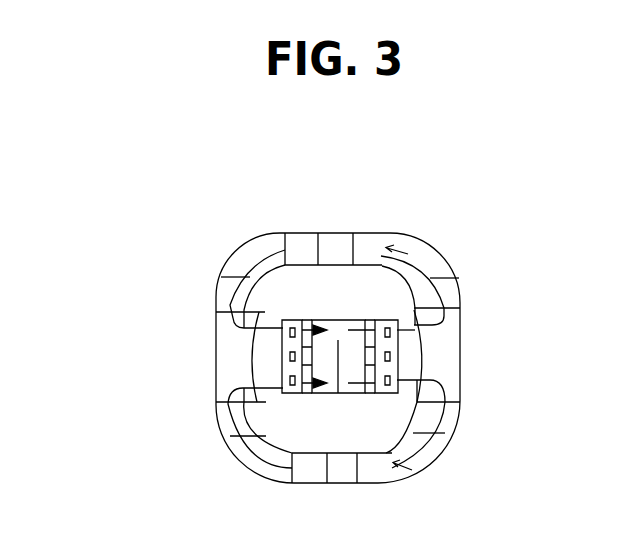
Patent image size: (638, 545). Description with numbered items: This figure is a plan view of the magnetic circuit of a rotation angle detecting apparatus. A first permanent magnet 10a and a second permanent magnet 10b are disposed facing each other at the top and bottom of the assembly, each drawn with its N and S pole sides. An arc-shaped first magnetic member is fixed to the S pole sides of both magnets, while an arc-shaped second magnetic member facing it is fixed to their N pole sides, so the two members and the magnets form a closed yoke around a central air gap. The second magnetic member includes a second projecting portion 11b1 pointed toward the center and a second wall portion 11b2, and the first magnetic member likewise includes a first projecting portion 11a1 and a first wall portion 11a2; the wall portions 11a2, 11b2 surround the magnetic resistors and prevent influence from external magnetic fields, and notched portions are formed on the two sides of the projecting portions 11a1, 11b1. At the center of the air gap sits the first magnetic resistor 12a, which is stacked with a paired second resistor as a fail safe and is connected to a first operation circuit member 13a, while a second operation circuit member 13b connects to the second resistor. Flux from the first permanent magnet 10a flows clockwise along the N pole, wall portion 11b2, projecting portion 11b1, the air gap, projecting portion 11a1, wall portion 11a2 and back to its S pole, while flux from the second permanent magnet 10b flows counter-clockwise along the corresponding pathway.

The first permanent magnet 10a is at (339, 463).
The second permanent magnet 10b is at (341, 252).
The first projecting portion 11a1 is at (445, 367).
The first wall portion 11a2 is at (427, 447).
The second projecting portion 11b1 is at (256, 346).
The second wall portion 11b2 is at (258, 468).
The first magnetic resistor 12a is at (335, 340).
The first operation circuit member 13a is at (398, 337).
The second operation circuit member 13b is at (283, 388).